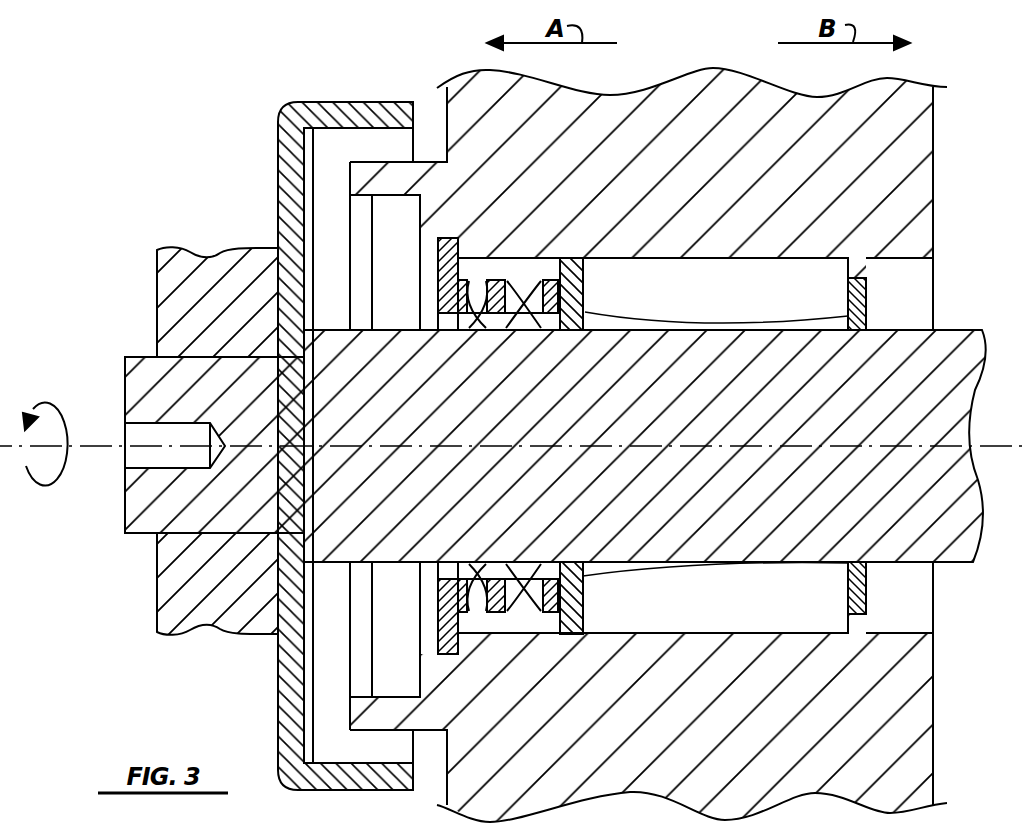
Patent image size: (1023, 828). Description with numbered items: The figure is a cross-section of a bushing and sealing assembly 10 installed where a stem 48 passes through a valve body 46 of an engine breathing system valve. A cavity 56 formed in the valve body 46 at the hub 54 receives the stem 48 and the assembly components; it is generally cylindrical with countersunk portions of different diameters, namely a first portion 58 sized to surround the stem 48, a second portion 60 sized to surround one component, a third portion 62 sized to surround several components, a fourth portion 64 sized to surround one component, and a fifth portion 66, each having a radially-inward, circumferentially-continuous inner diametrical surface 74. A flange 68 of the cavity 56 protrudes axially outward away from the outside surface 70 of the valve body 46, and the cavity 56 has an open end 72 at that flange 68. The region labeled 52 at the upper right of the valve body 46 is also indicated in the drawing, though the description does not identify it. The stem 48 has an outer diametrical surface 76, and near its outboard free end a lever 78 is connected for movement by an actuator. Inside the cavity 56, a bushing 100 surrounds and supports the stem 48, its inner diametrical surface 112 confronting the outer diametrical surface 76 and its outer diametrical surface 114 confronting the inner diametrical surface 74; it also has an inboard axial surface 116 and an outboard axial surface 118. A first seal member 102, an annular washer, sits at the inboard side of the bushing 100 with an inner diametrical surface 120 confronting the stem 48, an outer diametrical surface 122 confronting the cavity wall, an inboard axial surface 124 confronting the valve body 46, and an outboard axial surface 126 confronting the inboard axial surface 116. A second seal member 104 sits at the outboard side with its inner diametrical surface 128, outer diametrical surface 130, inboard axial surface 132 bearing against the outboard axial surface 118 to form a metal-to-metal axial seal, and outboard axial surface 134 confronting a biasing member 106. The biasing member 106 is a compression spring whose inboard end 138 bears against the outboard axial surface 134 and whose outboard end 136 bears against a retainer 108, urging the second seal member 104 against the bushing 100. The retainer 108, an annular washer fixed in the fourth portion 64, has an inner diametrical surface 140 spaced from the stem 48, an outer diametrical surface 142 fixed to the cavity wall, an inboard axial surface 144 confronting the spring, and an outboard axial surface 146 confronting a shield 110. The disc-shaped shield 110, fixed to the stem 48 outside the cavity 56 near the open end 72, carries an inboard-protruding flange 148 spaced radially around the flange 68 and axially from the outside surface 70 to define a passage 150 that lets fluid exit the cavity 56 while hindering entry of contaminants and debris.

The assembly 10 is at (849, 199).
The valve body 46 is at (885, 113).
The stem 48 is at (920, 392).
The housing bore 52 is at (933, 208).
The hub 54 is at (727, 133).
The cavity 56 is at (512, 262).
The first portion 58 is at (902, 563).
The second portion 60 is at (855, 613).
The third portion 62 is at (697, 632).
The fourth portion 64 is at (422, 655).
The fifth portion 66 is at (395, 692).
The flange 68 is at (370, 157).
The outside surface 70 is at (447, 107).
The open end 72 is at (352, 187).
The inner diametrical surface 74 is at (508, 618).
The outer diametrical surface 76 is at (905, 328).
The lever 78 is at (180, 292).
The bushing 100 is at (797, 608).
The first seal member 102 is at (853, 562).
The second seal member 104 is at (573, 563).
The biasing member 106 is at (465, 560).
The retainer 108 is at (453, 560).
The shield 110 is at (293, 667).
The inner diametrical surface 112 is at (597, 330).
The outer diametrical surface 114 is at (587, 258).
The inboard axial surface 116 is at (852, 275).
The outboard axial surface 118 is at (577, 280).
The inner diametrical surface 120 is at (852, 332).
The outer diametrical surface 122 is at (863, 278).
The inboard axial surface 124 is at (866, 300).
The outboard axial surface 126 is at (845, 290).
The inner diametrical surface 128 is at (571, 562).
The outer diametrical surface 130 is at (578, 637).
The inboard axial surface 132 is at (585, 598).
The outboard axial surface 134 is at (548, 620).
The outboard end 136 is at (497, 560).
The inboard end 138 is at (556, 563).
The inner diametrical surface 140 is at (444, 322).
The outer diametrical surface 142 is at (447, 237).
The inboard axial surface 144 is at (470, 260).
The outboard axial surface 146 is at (438, 263).
The flange 148 is at (377, 105).
The passage 150 is at (393, 148).